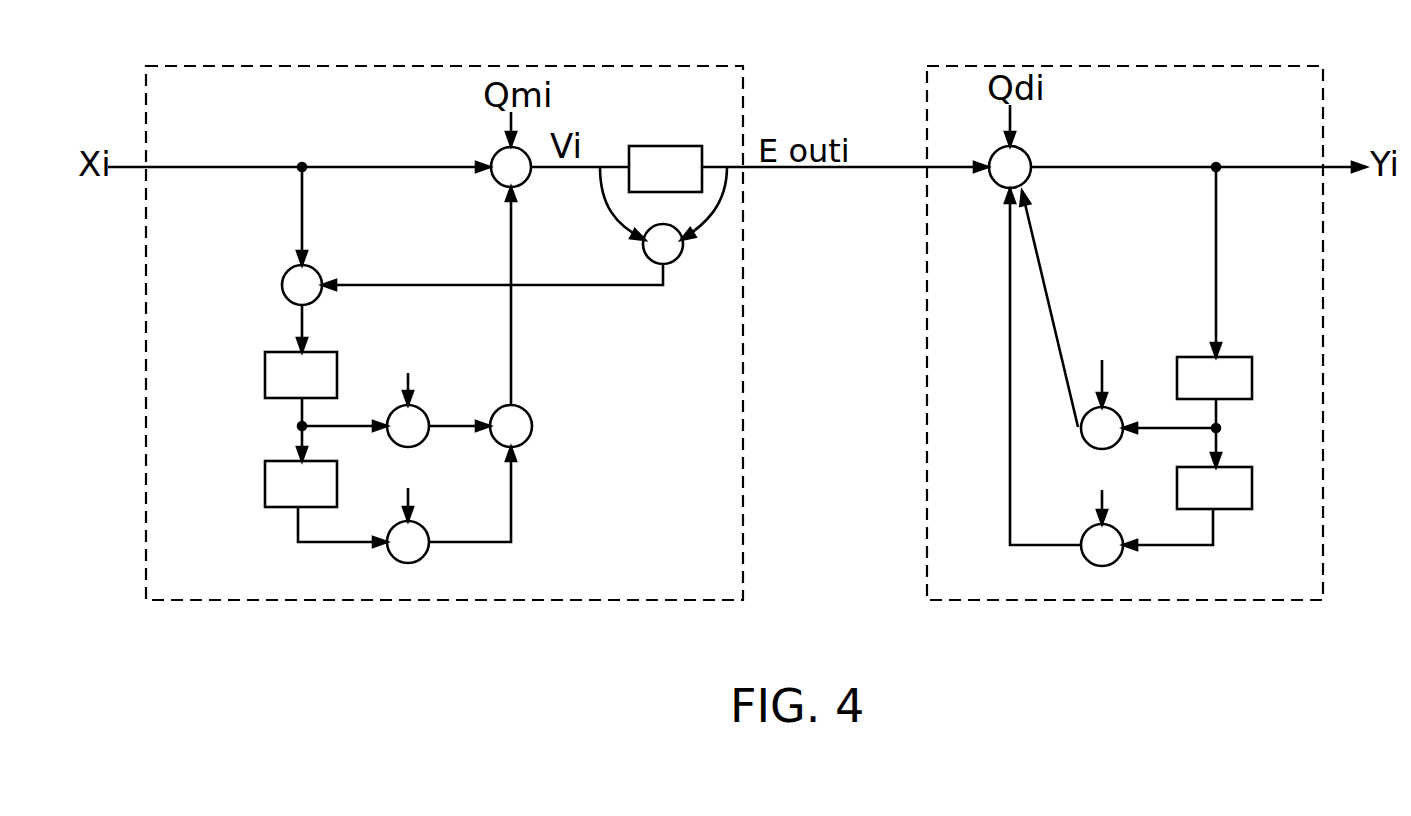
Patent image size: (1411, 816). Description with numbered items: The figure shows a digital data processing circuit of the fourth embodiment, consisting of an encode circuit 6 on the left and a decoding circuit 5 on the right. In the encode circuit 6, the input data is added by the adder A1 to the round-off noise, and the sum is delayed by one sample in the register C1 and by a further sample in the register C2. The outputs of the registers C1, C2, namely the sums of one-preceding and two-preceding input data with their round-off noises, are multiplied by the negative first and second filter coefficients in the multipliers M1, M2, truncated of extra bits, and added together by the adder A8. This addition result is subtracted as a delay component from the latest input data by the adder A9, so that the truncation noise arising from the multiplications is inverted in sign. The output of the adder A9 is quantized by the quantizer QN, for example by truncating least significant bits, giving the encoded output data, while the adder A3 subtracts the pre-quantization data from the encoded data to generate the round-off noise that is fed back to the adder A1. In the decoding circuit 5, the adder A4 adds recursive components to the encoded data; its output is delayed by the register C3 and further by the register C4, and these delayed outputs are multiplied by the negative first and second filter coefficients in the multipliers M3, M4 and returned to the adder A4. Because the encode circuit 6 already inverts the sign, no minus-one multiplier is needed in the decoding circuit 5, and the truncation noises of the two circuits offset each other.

The encode circuit 6 is at (382, 600).
The decoding circuit 5 is at (1115, 600).
The adder A1 is at (285, 273).
The adder A3 is at (675, 263).
The adder A4 is at (1000, 186).
The adder A8 is at (525, 441).
The adder A9 is at (494, 158).
The register C1 is at (372, 353).
The register C2 is at (372, 463).
The register C3 is at (1252, 378).
The register C4 is at (1252, 487).
The multiplier M1 is at (422, 441).
The multiplier M2 is at (422, 556).
The multiplier M3 is at (1088, 443).
The multiplier M4 is at (1115, 560).
The quantizer QN is at (660, 146).